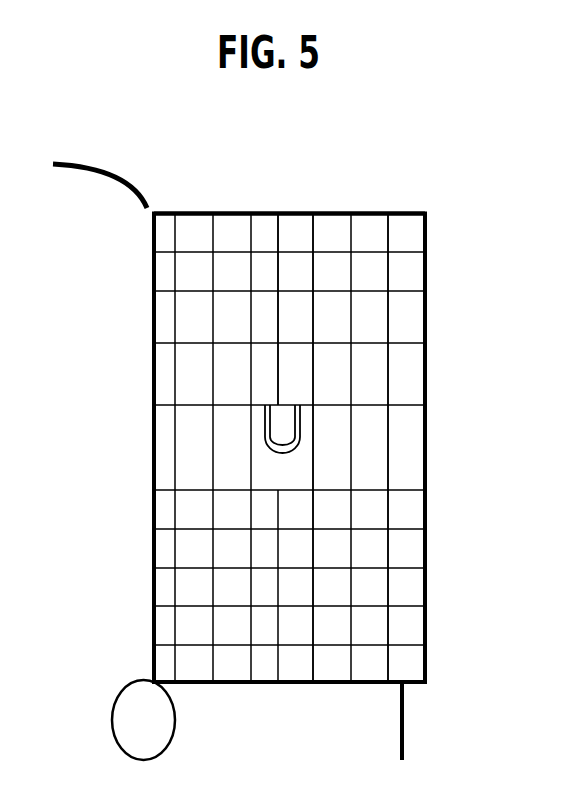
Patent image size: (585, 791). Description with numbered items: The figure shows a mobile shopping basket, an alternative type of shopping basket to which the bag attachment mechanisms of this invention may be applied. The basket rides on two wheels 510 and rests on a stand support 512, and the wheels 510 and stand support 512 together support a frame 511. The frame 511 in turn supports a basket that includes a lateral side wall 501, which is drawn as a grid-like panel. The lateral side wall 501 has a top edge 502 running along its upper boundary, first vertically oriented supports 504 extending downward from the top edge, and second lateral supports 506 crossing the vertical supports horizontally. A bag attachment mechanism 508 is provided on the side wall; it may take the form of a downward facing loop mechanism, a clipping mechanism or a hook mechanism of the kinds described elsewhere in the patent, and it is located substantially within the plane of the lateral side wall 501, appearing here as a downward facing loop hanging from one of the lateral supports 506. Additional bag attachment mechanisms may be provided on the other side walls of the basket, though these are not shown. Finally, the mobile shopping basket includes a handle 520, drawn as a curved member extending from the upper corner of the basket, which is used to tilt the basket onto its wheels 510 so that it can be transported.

The lateral side wall 501 is at (292, 590).
The top edge 502 is at (221, 212).
The first vertically oriented supports 504 is at (279, 315).
The second lateral supports 506 is at (372, 488).
The bag attachment mechanism 508 is at (265, 438).
The wheels 510 is at (110, 729).
The frame 511 is at (295, 685).
The stand support 512 is at (406, 722).
The handle 520 is at (122, 180).